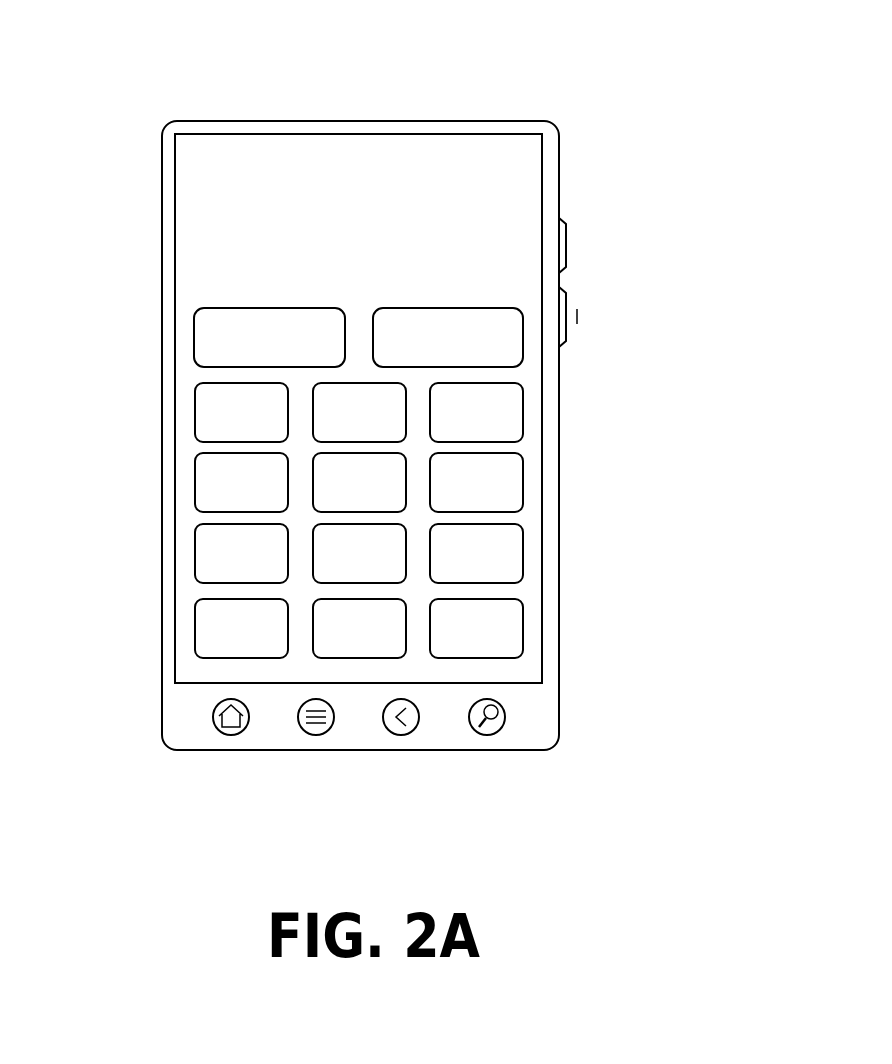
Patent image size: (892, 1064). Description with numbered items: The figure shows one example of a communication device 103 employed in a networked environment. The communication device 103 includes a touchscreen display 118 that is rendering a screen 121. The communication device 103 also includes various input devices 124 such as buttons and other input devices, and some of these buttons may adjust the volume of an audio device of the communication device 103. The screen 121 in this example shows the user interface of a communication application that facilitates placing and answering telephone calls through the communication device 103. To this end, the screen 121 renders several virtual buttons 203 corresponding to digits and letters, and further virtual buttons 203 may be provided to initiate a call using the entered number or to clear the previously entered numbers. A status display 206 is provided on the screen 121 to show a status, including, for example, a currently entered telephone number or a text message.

The communication device 103 is at (374, 459).
The touchscreen display 118 is at (262, 133).
The screen 121 is at (505, 168).
The input devices 124 is at (588, 243).
The virtual buttons 203 is at (233, 421).
The status display 206 is at (255, 262).